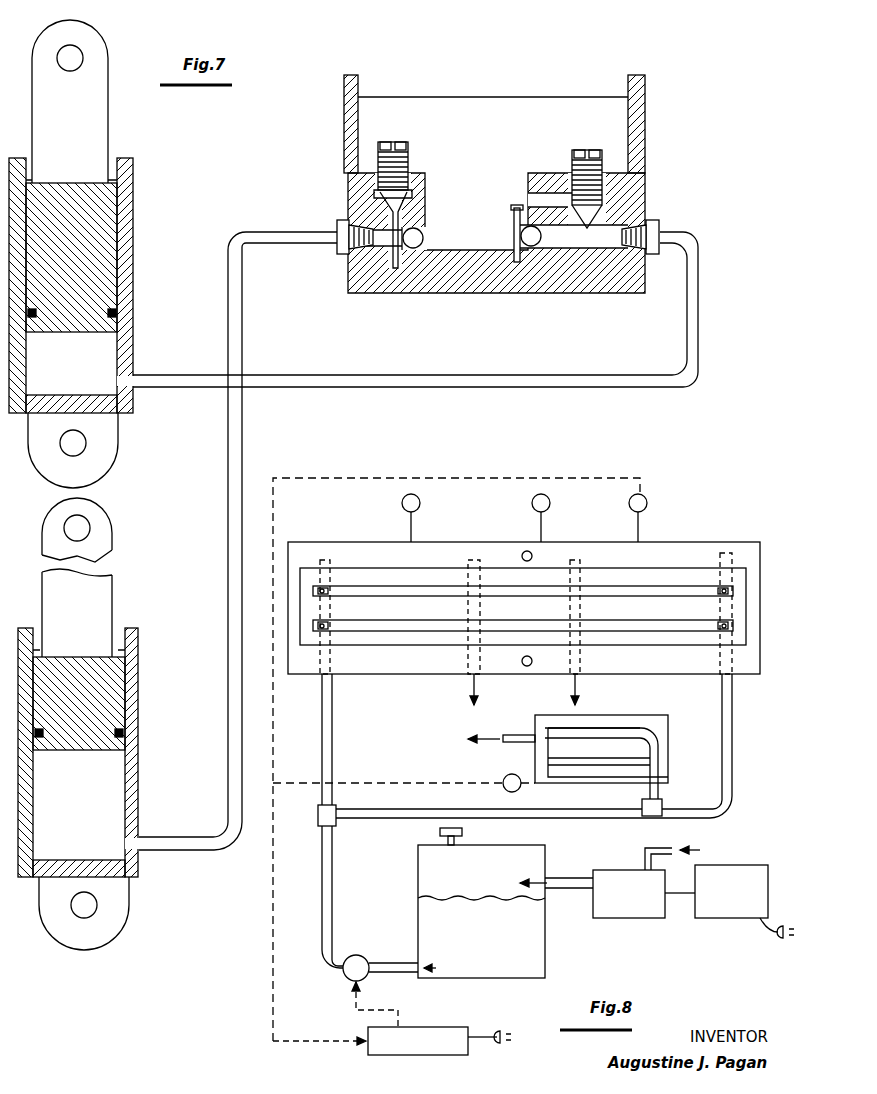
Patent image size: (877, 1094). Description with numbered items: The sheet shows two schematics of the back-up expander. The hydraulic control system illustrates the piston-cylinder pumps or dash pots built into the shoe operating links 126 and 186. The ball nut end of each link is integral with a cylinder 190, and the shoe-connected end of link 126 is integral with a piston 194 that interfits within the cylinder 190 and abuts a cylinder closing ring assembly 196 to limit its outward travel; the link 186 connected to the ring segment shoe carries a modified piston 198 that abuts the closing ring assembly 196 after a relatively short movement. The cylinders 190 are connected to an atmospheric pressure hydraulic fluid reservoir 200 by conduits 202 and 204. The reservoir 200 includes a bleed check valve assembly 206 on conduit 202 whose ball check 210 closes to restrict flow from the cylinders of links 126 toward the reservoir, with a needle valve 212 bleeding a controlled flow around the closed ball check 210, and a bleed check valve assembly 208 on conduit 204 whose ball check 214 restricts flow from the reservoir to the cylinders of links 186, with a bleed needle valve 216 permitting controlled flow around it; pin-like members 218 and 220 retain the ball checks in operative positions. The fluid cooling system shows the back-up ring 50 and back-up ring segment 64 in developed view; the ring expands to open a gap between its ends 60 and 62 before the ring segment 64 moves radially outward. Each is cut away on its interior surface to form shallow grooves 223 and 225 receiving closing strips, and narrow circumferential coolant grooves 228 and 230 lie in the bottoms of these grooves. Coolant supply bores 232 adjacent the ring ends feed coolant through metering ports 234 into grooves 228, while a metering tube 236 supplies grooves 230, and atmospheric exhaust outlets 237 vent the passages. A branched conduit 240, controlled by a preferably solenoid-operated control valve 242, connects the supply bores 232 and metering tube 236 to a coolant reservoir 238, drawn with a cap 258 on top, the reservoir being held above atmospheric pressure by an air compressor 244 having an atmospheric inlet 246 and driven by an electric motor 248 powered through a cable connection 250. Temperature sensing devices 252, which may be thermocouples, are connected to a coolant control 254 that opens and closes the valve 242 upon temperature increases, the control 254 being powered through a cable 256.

In FIG. 7, the shoe operating link 186 is at (142, 293).
In FIG. 7, the modified piston 198 is at (118, 226).
In FIG. 7, the cylinder closing ring assembly 196 is at (116, 158).
In FIG. 7, the cylinder 190 is at (120, 318).
In FIG. 7, the shoe operating link 126 is at (147, 742).
In FIG. 7, the piston 194 is at (108, 678).
In FIG. 7, the conduit 202 is at (228, 462).
In FIG. 7, the conduit 204 is at (416, 375).
In FIG. 7, the hydraulic fluid reservoir 200 is at (645, 121).
In FIG. 7, the needle valve 212 is at (386, 143).
In FIG. 7, the bleed check valve assembly 206 is at (412, 170).
In FIG. 7, the ball check 210 is at (410, 226).
In FIG. 7, the pin-like member 218 is at (424, 241).
In FIG. 7, the pin-like member 220 is at (512, 234).
In FIG. 7, the ball check 214 is at (538, 246).
In FIG. 7, the bleed check valve assembly 208 is at (584, 150).
In FIG. 7, the bleed needle valve 216 is at (602, 160).
In FIG. 8, the end of back-up ring 60 is at (288, 545).
In FIG. 8, the back-up ring 50 is at (505, 545).
In FIG. 8, the shallow groove 223 is at (433, 568).
In FIG. 8, the circumferential coolant groove 228 is at (363, 628).
In FIG. 8, the metering port 234 is at (326, 622).
In FIG. 8, the coolant supply bore 232 is at (328, 665).
In FIG. 8, the temperature sensing device 252 is at (402, 503).
In FIG. 8, the atmospheric exhaust outlet 237 is at (518, 733).
In FIG. 8, the back-up ring segment 64 is at (597, 712).
In FIG. 8, the shallow groove 225 is at (660, 722).
In FIG. 8, the circumferential coolant groove 230 is at (625, 725).
In FIG. 8, the metering tube 236 is at (660, 760).
In FIG. 8, the end of back-up ring 62 is at (762, 672).
In FIG. 8, the branched conduit 240 is at (733, 730).
In FIG. 8, the control valve 242 is at (362, 955).
In FIG. 8, the coolant reservoir 238 is at (535, 930).
In FIG. 8, the filler cap 258 is at (464, 836).
In FIG. 8, the air compressor 244 is at (635, 918).
In FIG. 8, the electric motor 248 is at (743, 866).
In FIG. 8, the atmospheric inlet 246 is at (647, 858).
In FIG. 8, the cable connection 250 is at (763, 935).
In FIG. 8, the coolant control 254 is at (400, 1056).
In FIG. 8, the cable 256 is at (492, 1040).